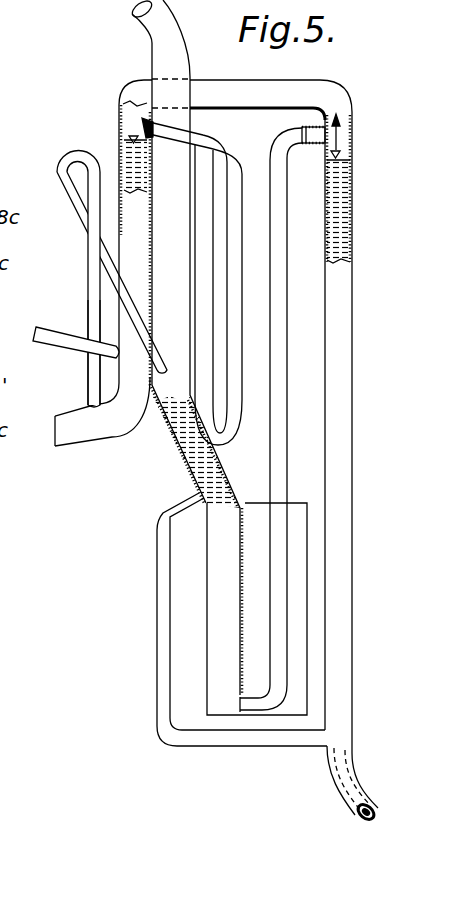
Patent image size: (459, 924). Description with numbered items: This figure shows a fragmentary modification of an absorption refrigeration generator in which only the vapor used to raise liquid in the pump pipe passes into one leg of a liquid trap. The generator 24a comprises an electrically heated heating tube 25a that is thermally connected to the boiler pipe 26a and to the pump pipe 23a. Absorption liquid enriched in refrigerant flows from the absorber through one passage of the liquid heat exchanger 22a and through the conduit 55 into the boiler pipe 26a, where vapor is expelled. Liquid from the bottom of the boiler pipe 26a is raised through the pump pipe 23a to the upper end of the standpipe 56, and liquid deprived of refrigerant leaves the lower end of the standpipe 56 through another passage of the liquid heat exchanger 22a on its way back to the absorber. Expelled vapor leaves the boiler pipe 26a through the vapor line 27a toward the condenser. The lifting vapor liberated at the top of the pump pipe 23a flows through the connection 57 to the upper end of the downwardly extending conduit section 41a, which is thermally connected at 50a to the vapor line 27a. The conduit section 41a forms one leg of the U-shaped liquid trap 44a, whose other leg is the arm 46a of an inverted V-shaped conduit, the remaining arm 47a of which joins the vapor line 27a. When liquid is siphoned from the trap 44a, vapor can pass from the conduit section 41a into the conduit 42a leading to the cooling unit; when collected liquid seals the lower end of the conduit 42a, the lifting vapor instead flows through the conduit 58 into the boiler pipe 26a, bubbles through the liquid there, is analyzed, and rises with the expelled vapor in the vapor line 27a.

The liquid heat exchanger 22a is at (347, 795).
The pump pipe 23a is at (270, 153).
The generator 24a is at (156, 587).
The heating tube 25a is at (283, 703).
The boiler pipe 26a is at (217, 650).
The vapor line 27a is at (163, 65).
The conduit section 41a is at (117, 129).
The conduit 42a is at (51, 328).
The U-shaped liquid trap 44a is at (109, 286).
The arm of inverted V-shaped conduit 46a is at (89, 373).
The arm of inverted V-shaped conduit 47a is at (133, 293).
The thermal connection 50a is at (150, 215).
The conduit 55 is at (157, 704).
The standpipe 56 is at (342, 358).
The connection 57 is at (250, 88).
The conduit 58 is at (229, 213).